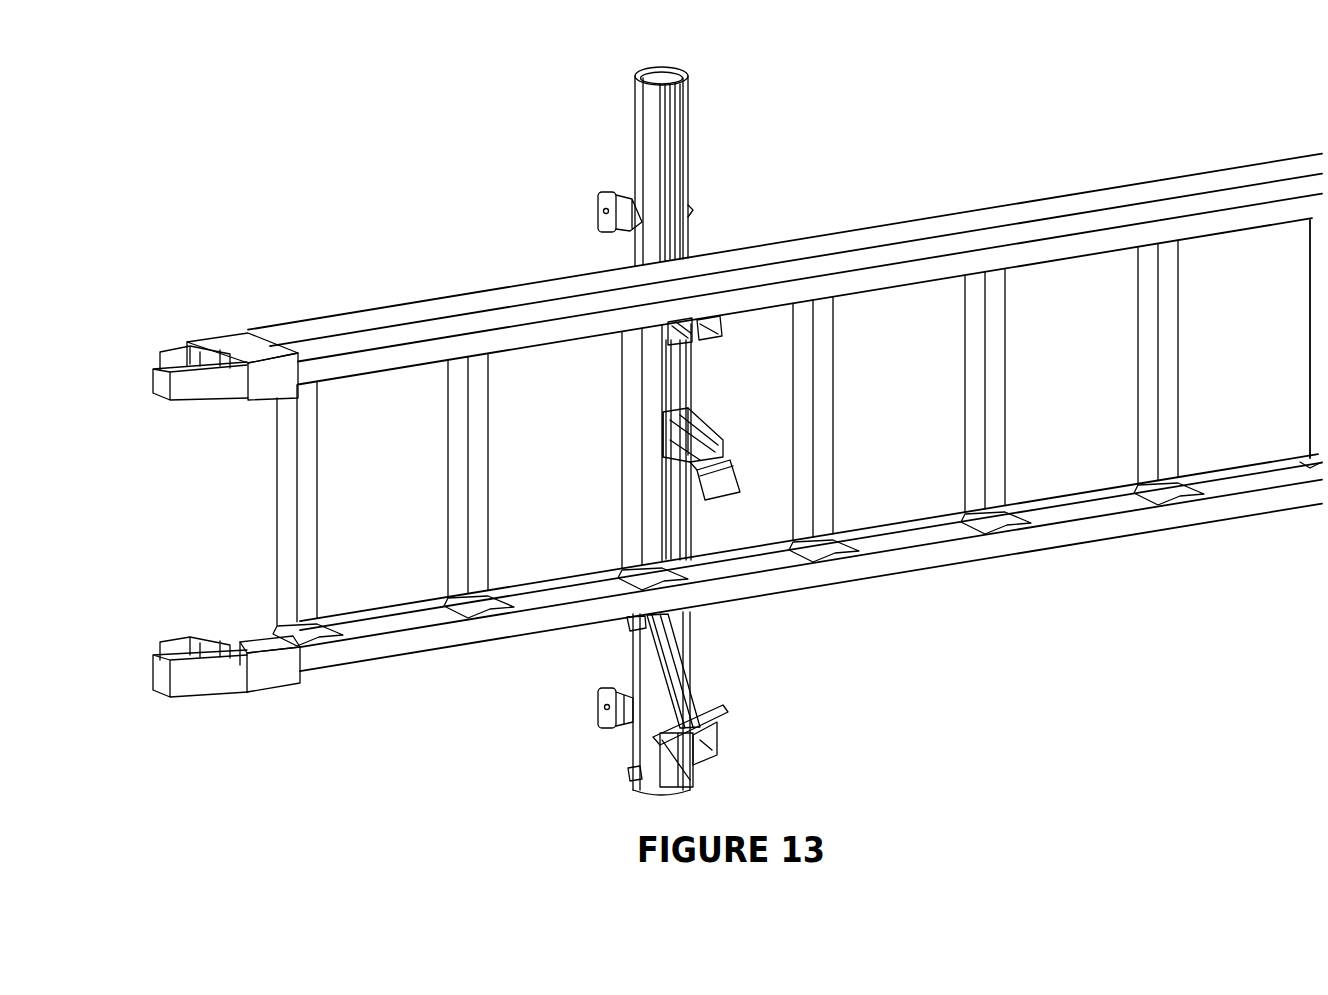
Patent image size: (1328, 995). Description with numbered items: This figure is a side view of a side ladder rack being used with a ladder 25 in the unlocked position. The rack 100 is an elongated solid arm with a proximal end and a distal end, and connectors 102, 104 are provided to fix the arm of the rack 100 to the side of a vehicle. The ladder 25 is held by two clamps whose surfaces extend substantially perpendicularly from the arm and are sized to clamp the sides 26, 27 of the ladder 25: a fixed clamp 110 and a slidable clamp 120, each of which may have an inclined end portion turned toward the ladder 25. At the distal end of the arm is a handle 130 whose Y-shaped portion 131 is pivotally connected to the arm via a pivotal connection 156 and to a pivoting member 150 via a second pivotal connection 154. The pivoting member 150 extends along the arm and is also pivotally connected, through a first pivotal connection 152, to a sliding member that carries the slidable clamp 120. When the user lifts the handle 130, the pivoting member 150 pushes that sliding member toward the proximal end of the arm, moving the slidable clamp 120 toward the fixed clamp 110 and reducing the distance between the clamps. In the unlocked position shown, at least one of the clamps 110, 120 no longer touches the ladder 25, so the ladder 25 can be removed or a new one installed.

The ladder 25 is at (1112, 560).
The side of the ladder 26 is at (830, 270).
The side of the ladder 27 is at (812, 577).
The rack 100 is at (648, 110).
The connector 102 is at (600, 193).
The connector 104 is at (598, 700).
The fixed clamp 110 is at (700, 337).
The slidable clamp 120 is at (716, 500).
The handle 130 is at (722, 712).
The Y-shaped portion 131 is at (690, 768).
The pivoting member 150 is at (682, 640).
The first pivotal connection 152 is at (628, 621).
The second pivotal connection 154 is at (694, 763).
The pivotal connection 156 is at (630, 776).